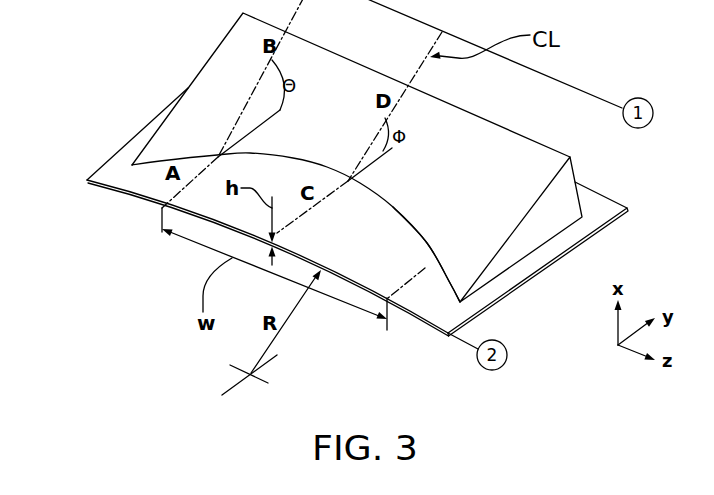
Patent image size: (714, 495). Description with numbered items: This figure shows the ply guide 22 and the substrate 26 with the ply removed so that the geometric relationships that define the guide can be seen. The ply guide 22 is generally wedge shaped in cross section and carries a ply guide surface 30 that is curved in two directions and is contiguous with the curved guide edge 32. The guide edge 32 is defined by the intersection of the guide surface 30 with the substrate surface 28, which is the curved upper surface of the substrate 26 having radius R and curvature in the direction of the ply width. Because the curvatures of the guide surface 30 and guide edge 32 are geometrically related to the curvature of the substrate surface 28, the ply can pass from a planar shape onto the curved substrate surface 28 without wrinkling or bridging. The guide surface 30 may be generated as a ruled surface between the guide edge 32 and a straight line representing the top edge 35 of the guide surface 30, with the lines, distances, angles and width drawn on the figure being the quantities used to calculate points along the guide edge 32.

The ply guide 22 is at (237, 47).
The ply guide surface 30 is at (211, 111).
The substrate 26 is at (123, 175).
The top edge 35 is at (560, 141).
The substrate surface 28 is at (602, 203).
The curved guide edge 32 is at (442, 284).